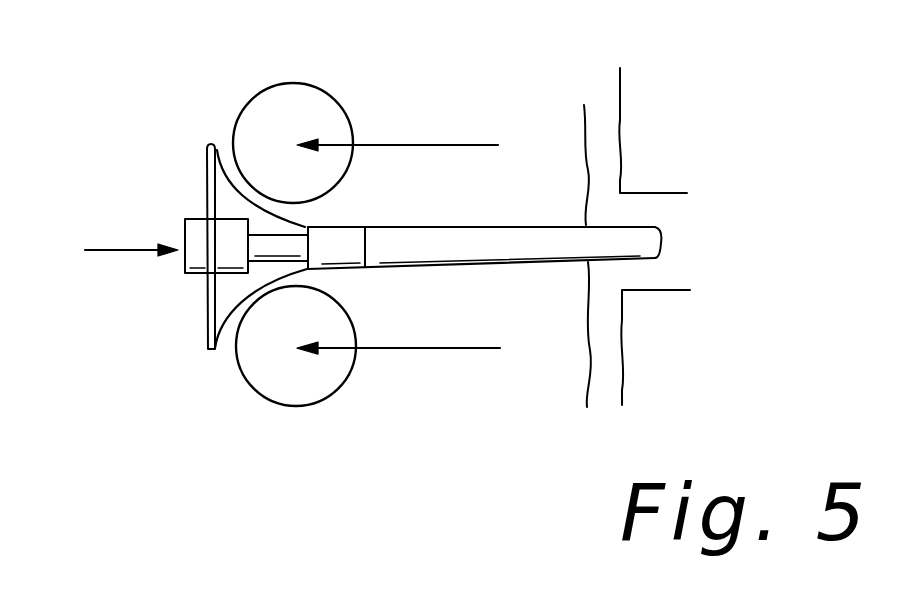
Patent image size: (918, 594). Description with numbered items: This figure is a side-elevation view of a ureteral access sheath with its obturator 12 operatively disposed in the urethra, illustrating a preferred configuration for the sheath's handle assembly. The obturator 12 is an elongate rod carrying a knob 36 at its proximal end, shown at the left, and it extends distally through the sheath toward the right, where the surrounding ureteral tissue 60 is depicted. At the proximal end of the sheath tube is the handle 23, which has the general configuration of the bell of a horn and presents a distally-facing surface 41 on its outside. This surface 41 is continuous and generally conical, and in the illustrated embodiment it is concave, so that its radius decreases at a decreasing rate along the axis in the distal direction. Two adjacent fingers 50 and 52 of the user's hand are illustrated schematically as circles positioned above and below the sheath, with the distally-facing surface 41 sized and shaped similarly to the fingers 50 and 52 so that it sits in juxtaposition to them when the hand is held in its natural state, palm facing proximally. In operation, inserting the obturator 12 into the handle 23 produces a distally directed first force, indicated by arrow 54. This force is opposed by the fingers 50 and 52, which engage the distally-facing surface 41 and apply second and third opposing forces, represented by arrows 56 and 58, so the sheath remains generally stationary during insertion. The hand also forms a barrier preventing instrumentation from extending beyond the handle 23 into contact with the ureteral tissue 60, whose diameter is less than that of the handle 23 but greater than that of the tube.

The obturator 12 is at (283, 247).
The handle 23 is at (178, 328).
The knob 36 is at (185, 219).
The distally-facing surface 41 is at (219, 160).
The finger 50 is at (298, 97).
The finger 52 is at (300, 383).
The arrow 54 is at (98, 252).
The arrow 56 is at (450, 143).
The arrow 58 is at (425, 350).
The ureteral tissue 60 is at (602, 152).